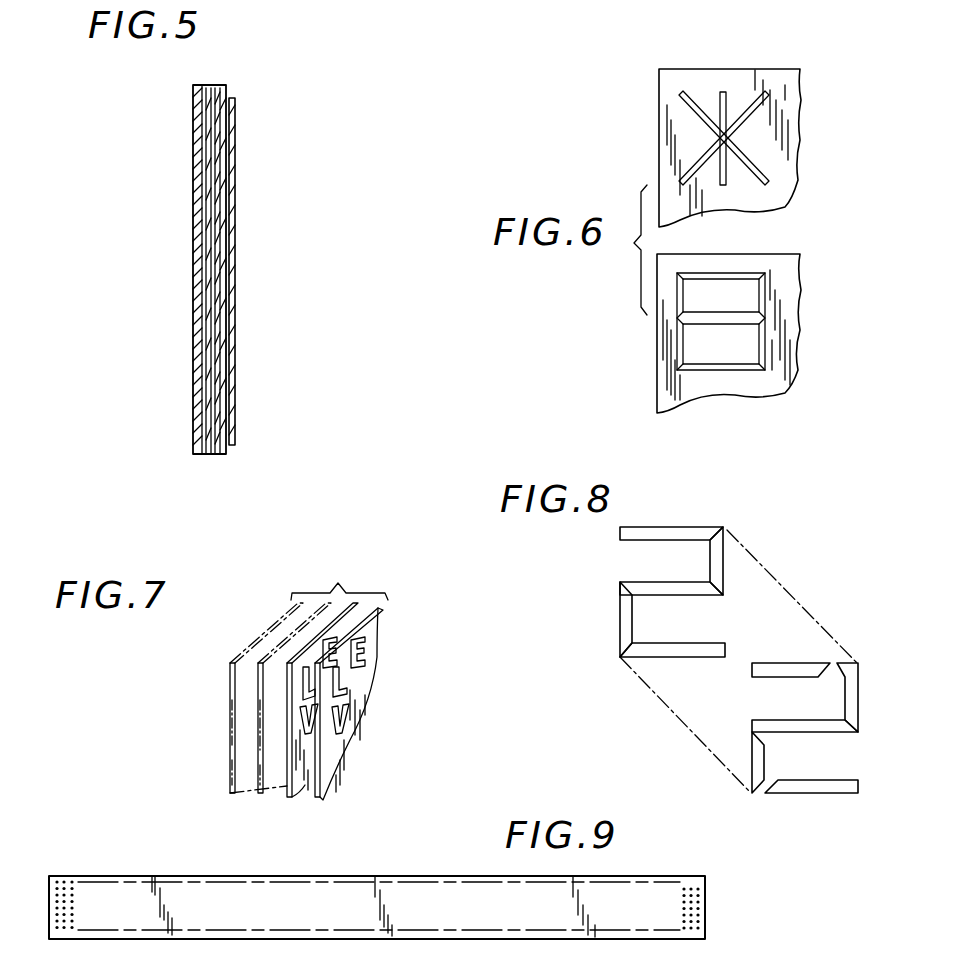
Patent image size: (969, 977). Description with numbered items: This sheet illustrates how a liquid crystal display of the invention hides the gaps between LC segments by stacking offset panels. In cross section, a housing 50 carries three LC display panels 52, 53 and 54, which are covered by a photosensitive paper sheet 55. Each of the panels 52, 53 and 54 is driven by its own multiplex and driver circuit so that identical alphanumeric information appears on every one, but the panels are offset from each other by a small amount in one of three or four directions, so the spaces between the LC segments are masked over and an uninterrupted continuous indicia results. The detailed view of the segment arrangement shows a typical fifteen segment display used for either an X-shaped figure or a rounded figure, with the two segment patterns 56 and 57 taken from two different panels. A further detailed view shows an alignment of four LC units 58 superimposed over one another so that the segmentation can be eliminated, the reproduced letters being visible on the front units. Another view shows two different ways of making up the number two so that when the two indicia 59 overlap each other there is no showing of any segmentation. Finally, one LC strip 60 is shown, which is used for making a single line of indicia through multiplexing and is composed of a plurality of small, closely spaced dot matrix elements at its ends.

In FIG. 5, the housing 50 is at (192, 400).
In FIG. 5, the LC display panel 52 is at (199, 455).
In FIG. 5, the LC display panel 53 is at (209, 455).
In FIG. 5, the LC display panel 54 is at (222, 448).
In FIG. 5, the photosensitive paper sheet 55 is at (236, 416).
In FIG. 6, the upper plate with asterisk cutout 56 is at (659, 122).
In FIG. 6, the lower plate with figure-eight cutout 57 is at (657, 357).
In FIG. 7, the LC units 58 is at (378, 628).
In FIG. 8, the indicia 59 is at (620, 610).
In FIG. 9, the elongated strip member 60 is at (440, 876).